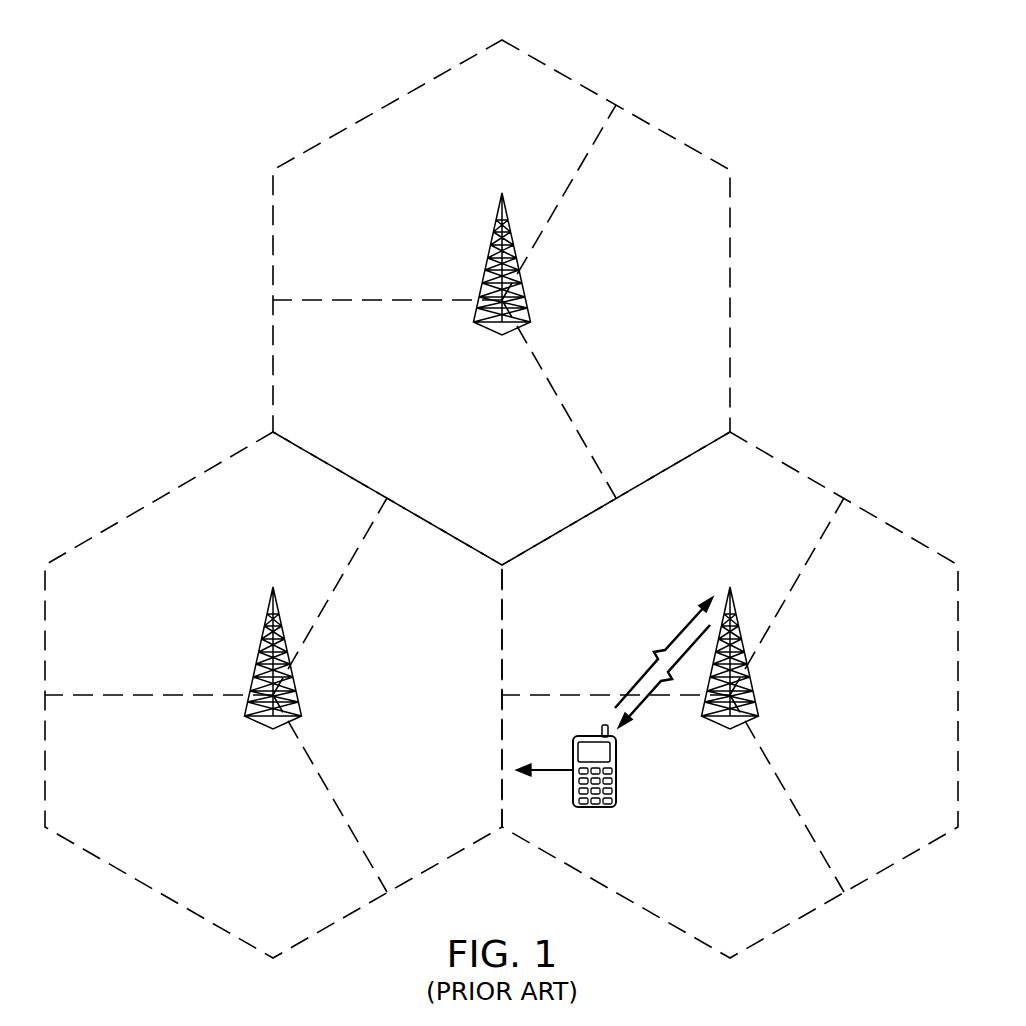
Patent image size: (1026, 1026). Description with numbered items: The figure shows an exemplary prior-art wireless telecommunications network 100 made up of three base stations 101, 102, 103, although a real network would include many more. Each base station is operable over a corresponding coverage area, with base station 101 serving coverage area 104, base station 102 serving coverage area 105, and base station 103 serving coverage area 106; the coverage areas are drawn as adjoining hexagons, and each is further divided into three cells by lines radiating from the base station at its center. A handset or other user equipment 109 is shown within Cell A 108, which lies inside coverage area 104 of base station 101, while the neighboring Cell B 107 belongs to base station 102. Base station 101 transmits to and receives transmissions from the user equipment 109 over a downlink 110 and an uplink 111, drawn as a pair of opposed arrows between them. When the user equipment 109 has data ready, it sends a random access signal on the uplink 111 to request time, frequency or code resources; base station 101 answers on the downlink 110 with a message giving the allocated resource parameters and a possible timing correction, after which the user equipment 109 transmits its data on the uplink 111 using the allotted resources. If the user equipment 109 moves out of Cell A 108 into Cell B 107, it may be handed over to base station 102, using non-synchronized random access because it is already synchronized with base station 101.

The wireless telecommunications network 100 is at (300, 102).
The base station 101 is at (760, 680).
The base station 102 is at (257, 645).
The base station 103 is at (483, 252).
The coverage area 104 is at (808, 915).
The coverage area 105 is at (195, 915).
The coverage area 106 is at (652, 122).
The Cell B 107 is at (390, 724).
The Cell A 108 is at (712, 552).
The user equipment 109 is at (596, 810).
The downlink 110 is at (640, 712).
The uplink 111 is at (635, 687).